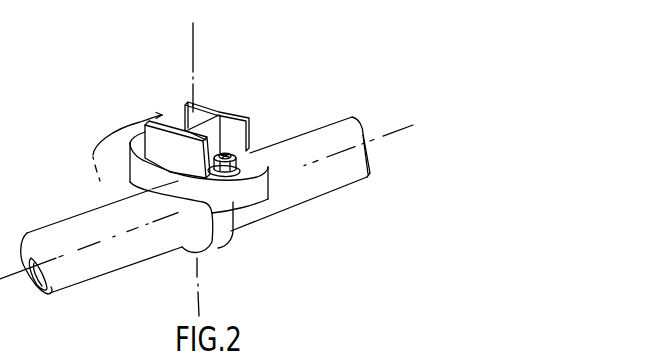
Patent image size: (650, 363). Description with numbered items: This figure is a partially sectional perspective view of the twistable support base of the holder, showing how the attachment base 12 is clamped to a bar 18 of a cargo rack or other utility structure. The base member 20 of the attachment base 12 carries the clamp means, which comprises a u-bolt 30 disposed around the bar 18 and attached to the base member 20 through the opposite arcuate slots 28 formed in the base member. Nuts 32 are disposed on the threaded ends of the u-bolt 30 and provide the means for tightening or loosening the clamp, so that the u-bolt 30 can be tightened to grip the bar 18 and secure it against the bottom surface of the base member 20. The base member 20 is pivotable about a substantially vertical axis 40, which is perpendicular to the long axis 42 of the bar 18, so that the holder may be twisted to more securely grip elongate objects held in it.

The attachment base 12 is at (222, 126).
The bar 18 is at (108, 260).
The base member 20 is at (160, 184).
The arcuate slots 28 is at (252, 158).
The u-bolt 30 is at (224, 246).
The nuts 32 is at (247, 154).
The vertical axis 40 is at (192, 35).
The long axis 42 is at (17, 281).